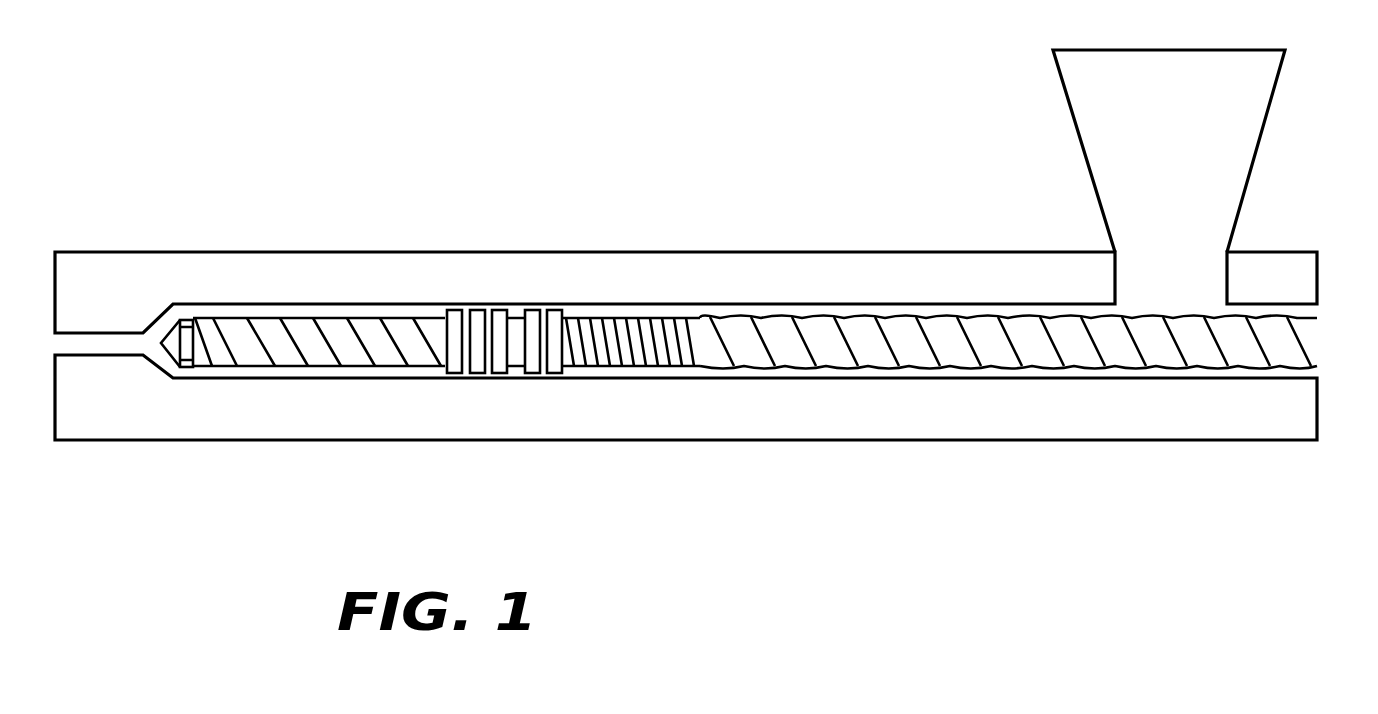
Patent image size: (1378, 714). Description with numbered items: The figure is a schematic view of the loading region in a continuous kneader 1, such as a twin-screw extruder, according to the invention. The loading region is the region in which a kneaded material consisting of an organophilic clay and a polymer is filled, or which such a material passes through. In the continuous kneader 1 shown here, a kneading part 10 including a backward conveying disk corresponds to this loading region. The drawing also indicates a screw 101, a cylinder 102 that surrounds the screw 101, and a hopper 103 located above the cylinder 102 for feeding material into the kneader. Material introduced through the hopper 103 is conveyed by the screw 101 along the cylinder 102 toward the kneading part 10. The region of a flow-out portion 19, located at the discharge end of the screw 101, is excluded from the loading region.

The continuous kneader 1 is at (780, 452).
The kneading part 10 is at (600, 312).
The flow-out portion 19 is at (232, 316).
The screw 101 is at (864, 328).
The cylinder 102 is at (987, 305).
The hopper 103 is at (1253, 88).